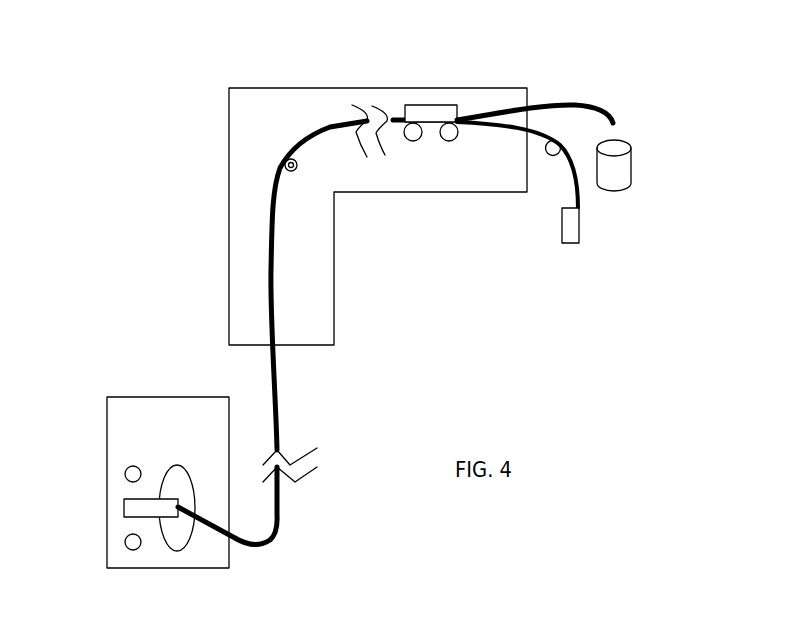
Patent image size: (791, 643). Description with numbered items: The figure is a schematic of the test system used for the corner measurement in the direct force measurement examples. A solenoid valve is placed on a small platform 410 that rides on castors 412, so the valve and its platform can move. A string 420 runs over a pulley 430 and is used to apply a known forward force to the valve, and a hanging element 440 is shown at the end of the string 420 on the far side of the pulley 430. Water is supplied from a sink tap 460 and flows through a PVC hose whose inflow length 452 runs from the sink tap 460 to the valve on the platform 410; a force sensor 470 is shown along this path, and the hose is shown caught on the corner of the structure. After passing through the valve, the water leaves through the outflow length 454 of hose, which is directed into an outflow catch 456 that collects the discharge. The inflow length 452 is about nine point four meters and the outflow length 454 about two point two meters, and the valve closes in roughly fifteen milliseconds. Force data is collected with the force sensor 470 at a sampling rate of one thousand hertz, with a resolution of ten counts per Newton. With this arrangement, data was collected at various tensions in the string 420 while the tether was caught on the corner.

The platform 410 is at (423, 105).
The castors 412 is at (454, 141).
The string 420 is at (581, 226).
The pulley 430 is at (553, 156).
The weight 440 is at (580, 235).
The inflow length 452 is at (265, 260).
The outflow length 454 is at (575, 105).
The outflow catch 456 is at (613, 173).
The sink tap 460 is at (124, 513).
The force sensor 470 is at (297, 168).